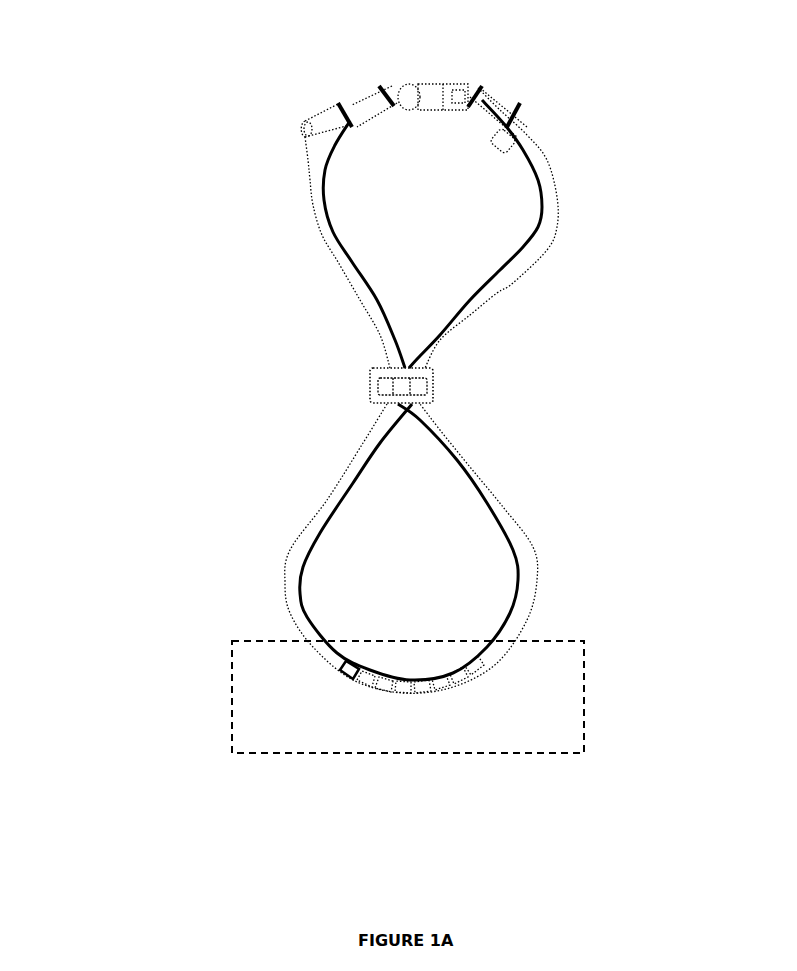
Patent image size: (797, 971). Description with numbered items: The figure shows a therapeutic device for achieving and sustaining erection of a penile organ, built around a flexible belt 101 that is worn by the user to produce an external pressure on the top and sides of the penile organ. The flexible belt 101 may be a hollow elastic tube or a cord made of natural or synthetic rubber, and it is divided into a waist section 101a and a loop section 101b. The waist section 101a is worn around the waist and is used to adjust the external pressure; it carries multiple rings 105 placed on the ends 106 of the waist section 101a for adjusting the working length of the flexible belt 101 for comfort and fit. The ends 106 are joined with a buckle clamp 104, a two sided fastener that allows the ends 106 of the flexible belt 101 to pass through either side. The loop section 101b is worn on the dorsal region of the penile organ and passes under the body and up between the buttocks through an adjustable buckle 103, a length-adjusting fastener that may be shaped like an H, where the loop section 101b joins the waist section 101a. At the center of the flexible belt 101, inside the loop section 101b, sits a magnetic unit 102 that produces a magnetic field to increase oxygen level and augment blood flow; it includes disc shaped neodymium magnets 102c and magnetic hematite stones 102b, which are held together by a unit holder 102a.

The flexible belt 101 is at (503, 283).
The waist section 101a is at (337, 263).
The loop section 101b is at (283, 577).
The magnetic unit 102 is at (590, 671).
The unit holder 102a is at (335, 663).
The magnetic hematite stones 102b is at (392, 682).
The neodymium magnets 102c is at (452, 679).
The adjustable buckle 103 is at (370, 392).
The buckle clamp 104 is at (425, 88).
The rings 105 is at (382, 91).
The ends 106 is at (300, 129).